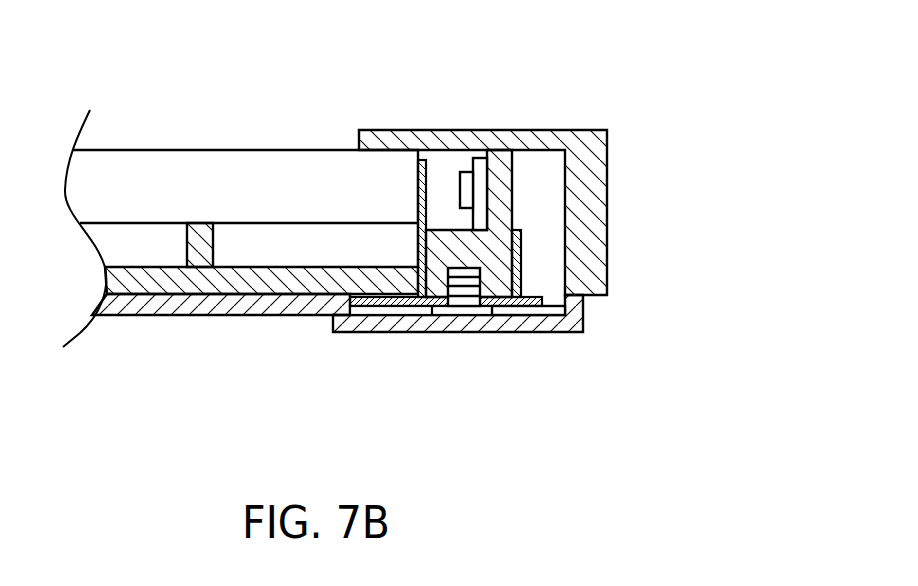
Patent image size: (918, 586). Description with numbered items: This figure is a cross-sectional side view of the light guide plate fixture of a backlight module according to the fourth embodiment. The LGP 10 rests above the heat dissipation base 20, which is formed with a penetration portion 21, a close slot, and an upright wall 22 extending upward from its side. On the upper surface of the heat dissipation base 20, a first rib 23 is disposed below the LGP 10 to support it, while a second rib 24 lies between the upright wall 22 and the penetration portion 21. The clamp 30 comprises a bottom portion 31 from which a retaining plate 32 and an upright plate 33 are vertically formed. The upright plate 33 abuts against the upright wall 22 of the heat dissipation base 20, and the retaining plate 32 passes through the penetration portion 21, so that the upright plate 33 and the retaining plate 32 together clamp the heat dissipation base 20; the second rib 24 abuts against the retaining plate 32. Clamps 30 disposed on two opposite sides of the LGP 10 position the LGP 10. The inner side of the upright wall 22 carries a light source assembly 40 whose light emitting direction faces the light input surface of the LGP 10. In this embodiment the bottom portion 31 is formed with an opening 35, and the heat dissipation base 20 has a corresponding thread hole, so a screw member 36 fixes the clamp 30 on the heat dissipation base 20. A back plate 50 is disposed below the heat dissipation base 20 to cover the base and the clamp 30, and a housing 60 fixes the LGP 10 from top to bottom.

The LGP 10 is at (197, 170).
The heat dissipation base 20 is at (227, 288).
The penetration portion 21 is at (393, 298).
The upright wall 22 is at (500, 168).
The first rib 23 is at (193, 245).
The second rib 24 is at (490, 308).
The clamp 30 is at (527, 277).
The bottom portion 31 is at (540, 308).
The retaining plate 32 is at (423, 157).
The upright plate 33 is at (522, 245).
The opening 35 is at (457, 308).
The screw member 36 is at (468, 308).
The light source assembly 40 is at (471, 168).
The back plate 50 is at (580, 313).
The housing 60 is at (577, 135).